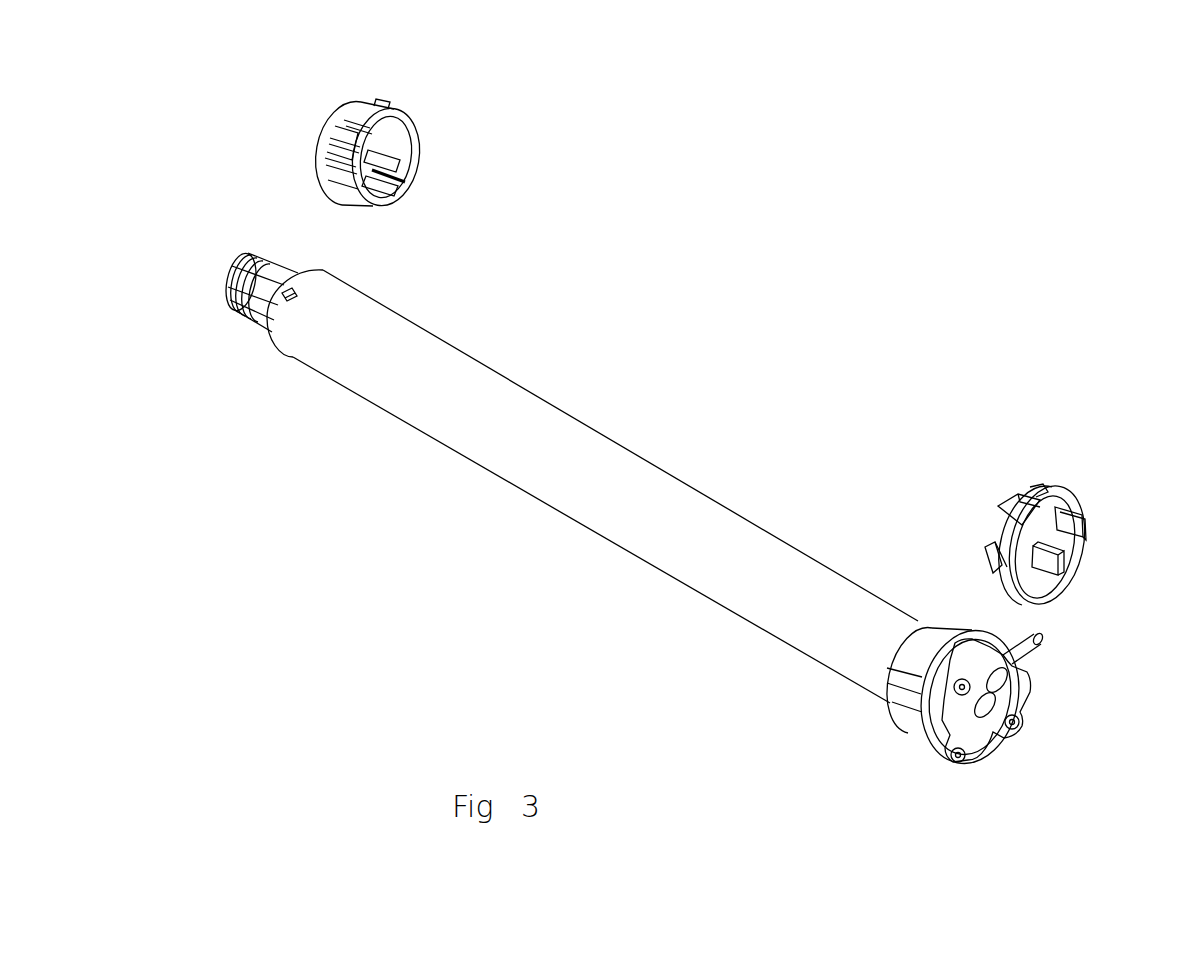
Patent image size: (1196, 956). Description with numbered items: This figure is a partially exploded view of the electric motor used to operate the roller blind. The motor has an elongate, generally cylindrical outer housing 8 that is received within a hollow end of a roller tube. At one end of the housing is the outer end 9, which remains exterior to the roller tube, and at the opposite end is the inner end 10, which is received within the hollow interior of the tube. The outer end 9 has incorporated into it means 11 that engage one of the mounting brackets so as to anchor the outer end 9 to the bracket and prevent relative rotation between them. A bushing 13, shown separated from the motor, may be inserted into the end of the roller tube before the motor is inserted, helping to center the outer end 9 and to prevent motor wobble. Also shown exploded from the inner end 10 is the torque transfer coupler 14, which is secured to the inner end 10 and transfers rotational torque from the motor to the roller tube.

The outer housing 8 is at (588, 492).
The outer end 9 is at (993, 740).
The inner end 10 is at (227, 293).
The means 11 is at (990, 743).
The bushing 13 is at (1093, 507).
The torque transfer coupler 14 is at (420, 128).